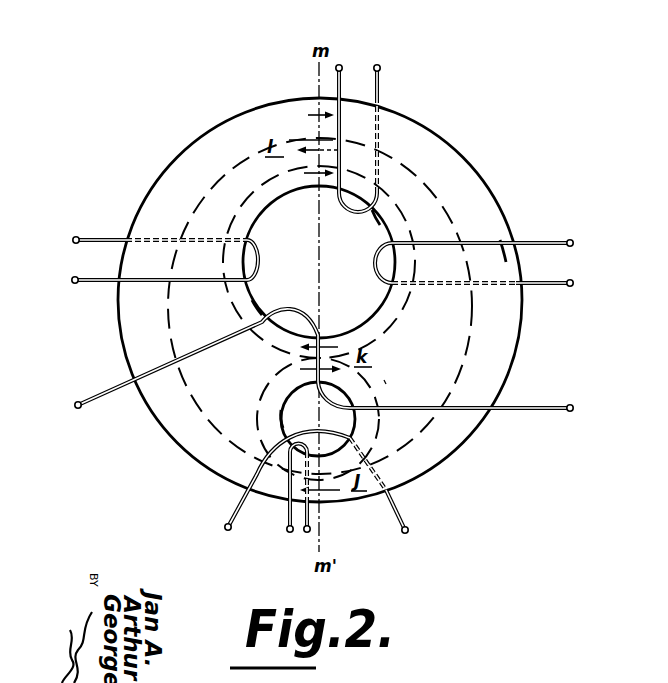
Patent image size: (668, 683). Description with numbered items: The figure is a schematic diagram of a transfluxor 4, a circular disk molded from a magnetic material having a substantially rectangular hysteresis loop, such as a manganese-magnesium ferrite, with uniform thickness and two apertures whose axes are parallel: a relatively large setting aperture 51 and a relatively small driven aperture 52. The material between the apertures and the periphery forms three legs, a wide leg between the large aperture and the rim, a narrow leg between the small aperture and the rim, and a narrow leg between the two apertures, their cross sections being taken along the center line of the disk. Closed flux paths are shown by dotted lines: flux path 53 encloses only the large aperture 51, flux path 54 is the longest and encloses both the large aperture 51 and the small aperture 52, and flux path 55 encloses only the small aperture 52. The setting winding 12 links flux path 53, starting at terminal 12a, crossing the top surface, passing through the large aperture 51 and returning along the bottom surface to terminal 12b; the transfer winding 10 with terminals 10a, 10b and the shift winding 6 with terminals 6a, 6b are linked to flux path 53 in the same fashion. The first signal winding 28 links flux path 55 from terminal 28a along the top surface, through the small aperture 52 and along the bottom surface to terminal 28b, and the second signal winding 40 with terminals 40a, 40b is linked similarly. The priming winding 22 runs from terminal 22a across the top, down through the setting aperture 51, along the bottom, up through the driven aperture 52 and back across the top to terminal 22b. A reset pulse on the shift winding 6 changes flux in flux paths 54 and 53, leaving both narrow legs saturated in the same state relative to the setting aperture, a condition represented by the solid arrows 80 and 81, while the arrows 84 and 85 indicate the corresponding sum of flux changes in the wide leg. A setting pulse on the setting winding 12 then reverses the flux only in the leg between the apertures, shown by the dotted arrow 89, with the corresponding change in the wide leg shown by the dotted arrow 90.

The transfluxor 4 is at (209, 129).
The shift winding 6 is at (384, 89).
The shift winding terminal 6a is at (342, 66).
The shift winding terminal 6b is at (381, 65).
The transfer winding 10 is at (546, 286).
The transfer winding terminal 10a is at (574, 246).
The transfer winding terminal 10b is at (574, 284).
The setting winding 12 is at (100, 283).
The setting winding terminal 12a is at (74, 284).
The setting winding terminal 12b is at (73, 243).
The priming winding 22 is at (116, 390).
The priming winding terminal 22a is at (78, 402).
The priming winding terminal 22b is at (575, 398).
The first signal winding 28 is at (247, 490).
The first signal winding terminal 28a is at (227, 522).
The first signal winding terminal 28b is at (405, 534).
The second signal winding 40 is at (218, 549).
The second signal winding terminal 40a is at (288, 533).
The second signal winding terminal 40b is at (307, 533).
The large aperture 51 is at (262, 293).
The small aperture 52 is at (280, 401).
The flux path 53 is at (380, 220).
The flux path 54 is at (466, 215).
The flux path 55 is at (378, 393).
The solid arrow 80 is at (322, 490).
The solid arrow 81 is at (328, 333).
The arrow 84 is at (315, 113).
The arrow 85 is at (313, 176).
The dotted arrow 89 is at (276, 380).
The dotted arrow 90 is at (304, 136).